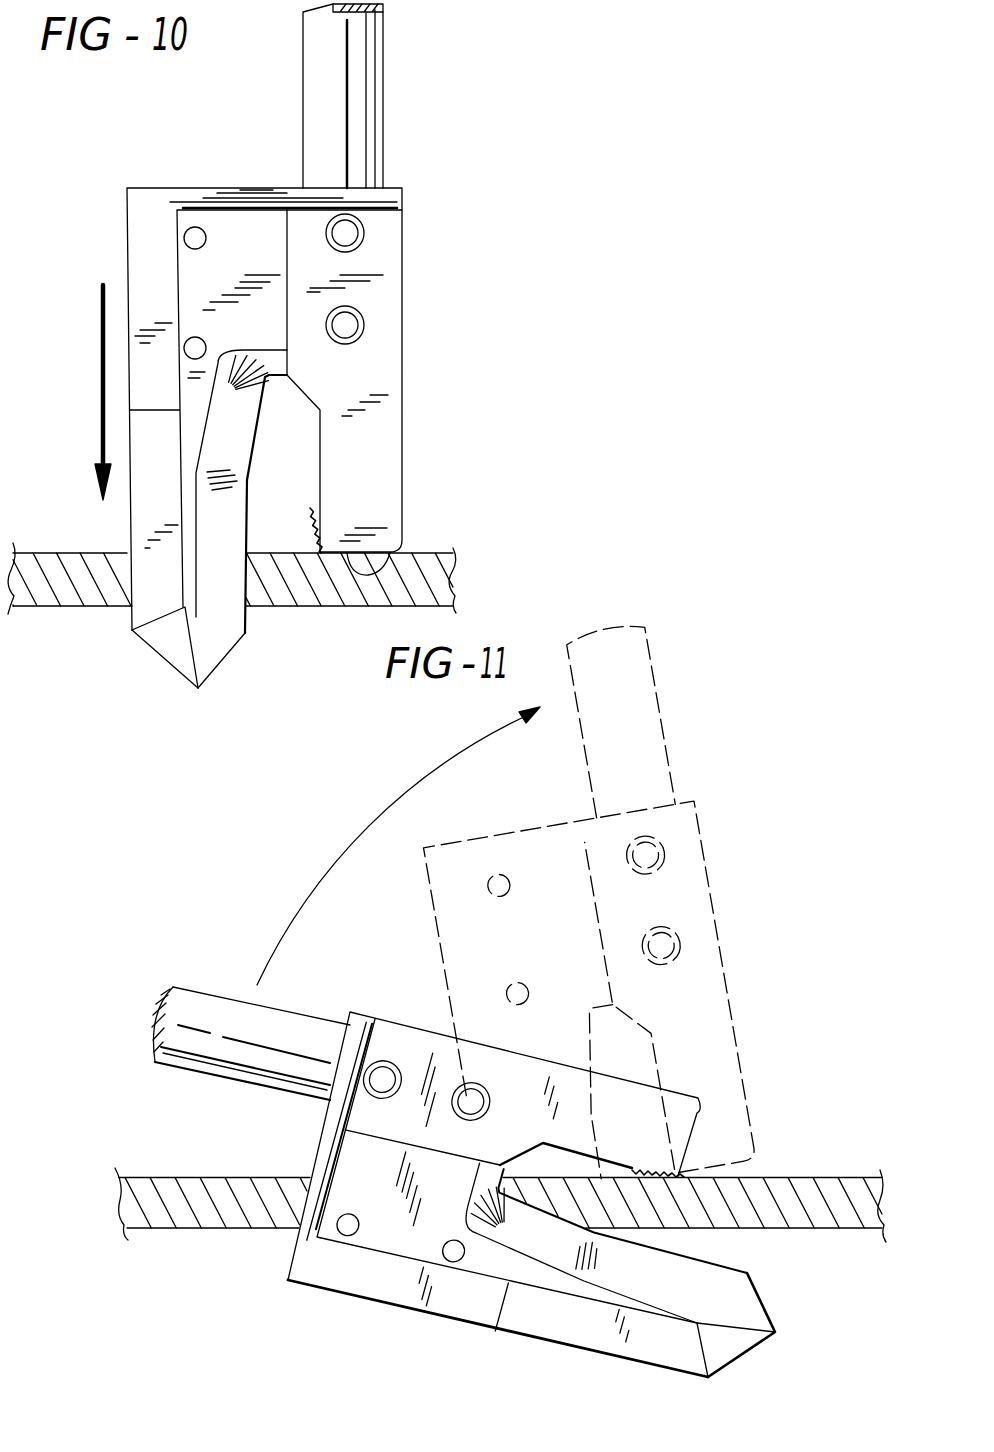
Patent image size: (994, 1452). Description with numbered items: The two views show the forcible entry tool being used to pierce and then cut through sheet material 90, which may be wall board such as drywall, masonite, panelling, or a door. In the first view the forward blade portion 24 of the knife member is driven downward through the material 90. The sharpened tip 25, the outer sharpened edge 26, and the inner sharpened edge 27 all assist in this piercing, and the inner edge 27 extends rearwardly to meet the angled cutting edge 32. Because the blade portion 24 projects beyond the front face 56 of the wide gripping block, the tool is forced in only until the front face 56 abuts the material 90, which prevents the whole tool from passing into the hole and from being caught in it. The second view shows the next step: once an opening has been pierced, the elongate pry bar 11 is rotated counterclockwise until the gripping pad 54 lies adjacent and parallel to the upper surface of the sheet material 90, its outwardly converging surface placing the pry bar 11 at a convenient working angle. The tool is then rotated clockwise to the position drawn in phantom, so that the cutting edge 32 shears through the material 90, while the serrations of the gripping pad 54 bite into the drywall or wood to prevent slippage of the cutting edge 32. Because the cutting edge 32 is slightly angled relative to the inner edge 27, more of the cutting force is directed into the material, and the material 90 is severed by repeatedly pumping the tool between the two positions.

In FIG. 10, the elongate pry bar 11 is at (383, 97).
In FIG. 11, the elongate pry bar 11 is at (198, 985).
In FIG. 10, the forward blade portion 24 is at (130, 632).
In FIG. 10, the sharpened tip 25 is at (222, 668).
In FIG. 10, the outer sharpened edge 26 is at (150, 522).
In FIG. 10, the inner sharpened edge 27 is at (228, 623).
In FIG. 11, the inner sharpened edge 27 is at (690, 1250).
In FIG. 10, the angled cutting edge 32 is at (240, 438).
In FIG. 11, the angled cutting edge 32 is at (567, 1195).
In FIG. 10, the gripping pad 54 is at (313, 535).
In FIG. 11, the gripping pad 54 is at (717, 1177).
In FIG. 10, the front face 56 is at (372, 572).
In FIG. 10, the sheet material 90 is at (453, 578).
In FIG. 11, the sheet material 90 is at (797, 1187).